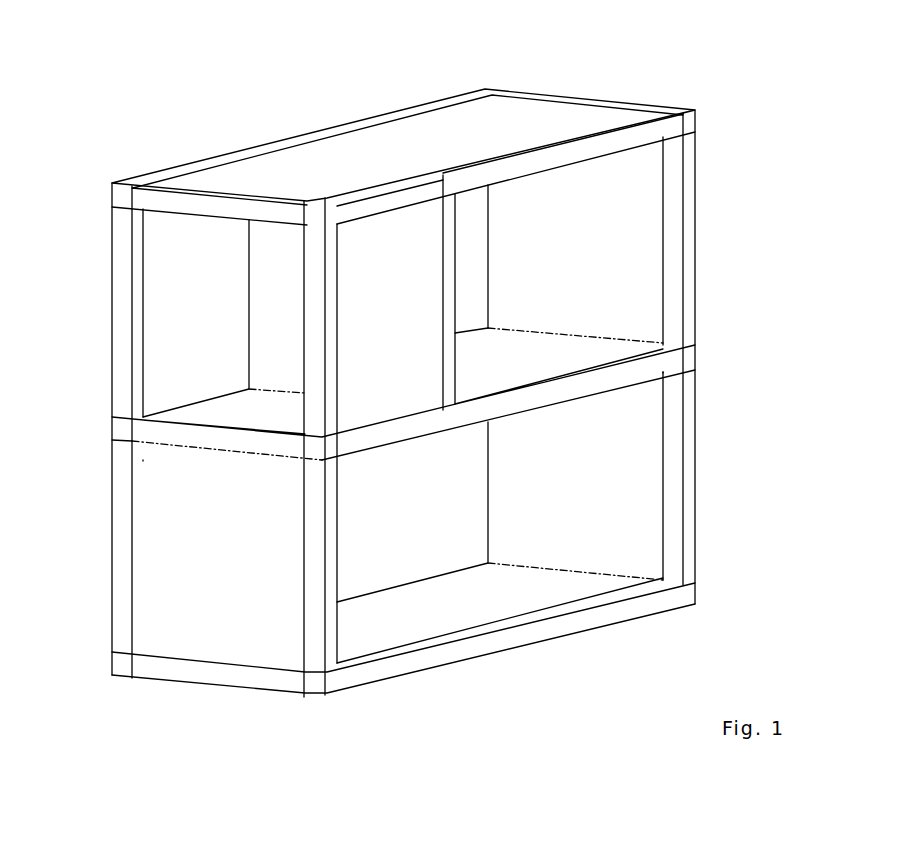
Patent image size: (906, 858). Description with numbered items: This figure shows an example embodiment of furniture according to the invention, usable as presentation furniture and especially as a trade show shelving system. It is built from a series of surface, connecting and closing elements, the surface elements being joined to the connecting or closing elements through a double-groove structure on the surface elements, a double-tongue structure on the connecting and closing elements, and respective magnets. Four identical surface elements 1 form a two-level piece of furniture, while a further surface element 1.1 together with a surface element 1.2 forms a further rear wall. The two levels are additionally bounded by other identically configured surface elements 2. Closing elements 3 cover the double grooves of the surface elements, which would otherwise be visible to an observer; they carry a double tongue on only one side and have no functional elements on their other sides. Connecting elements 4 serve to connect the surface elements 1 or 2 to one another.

The surface element 1 is at (310, 163).
The further surface element 1.1 is at (160, 275).
The surface element 1.2 is at (470, 250).
The surface element 2 is at (627, 267).
The closing element 3 is at (178, 200).
The connecting element 4 is at (353, 122).